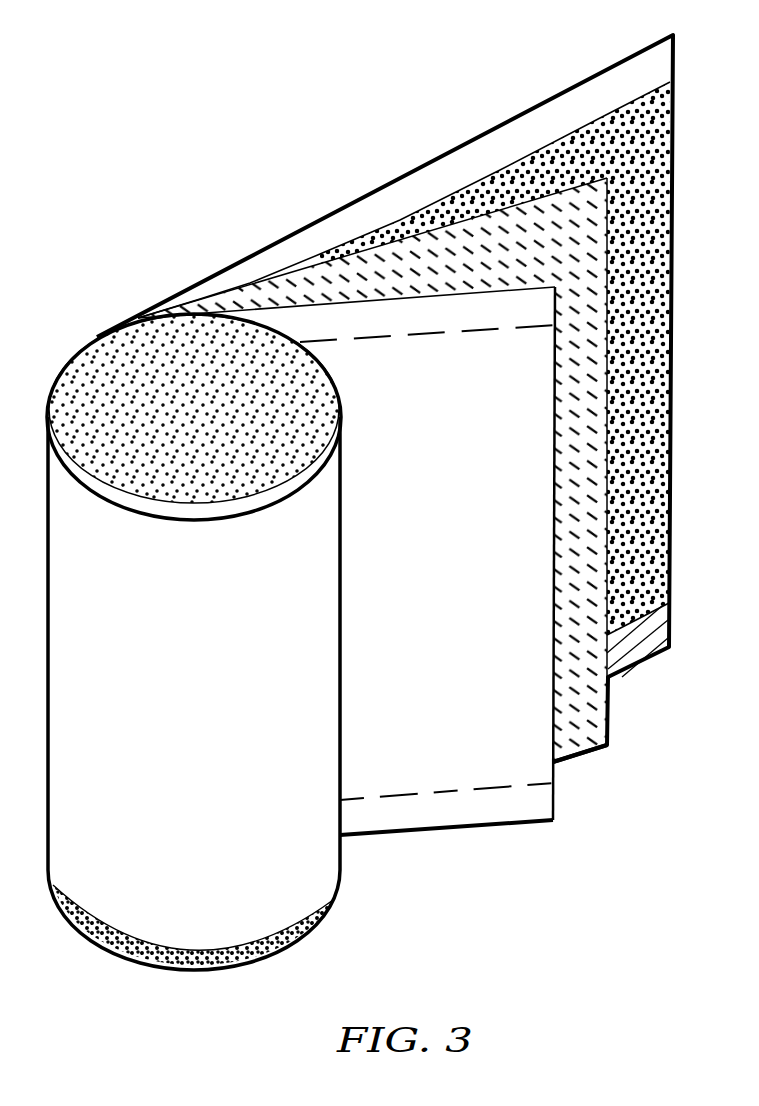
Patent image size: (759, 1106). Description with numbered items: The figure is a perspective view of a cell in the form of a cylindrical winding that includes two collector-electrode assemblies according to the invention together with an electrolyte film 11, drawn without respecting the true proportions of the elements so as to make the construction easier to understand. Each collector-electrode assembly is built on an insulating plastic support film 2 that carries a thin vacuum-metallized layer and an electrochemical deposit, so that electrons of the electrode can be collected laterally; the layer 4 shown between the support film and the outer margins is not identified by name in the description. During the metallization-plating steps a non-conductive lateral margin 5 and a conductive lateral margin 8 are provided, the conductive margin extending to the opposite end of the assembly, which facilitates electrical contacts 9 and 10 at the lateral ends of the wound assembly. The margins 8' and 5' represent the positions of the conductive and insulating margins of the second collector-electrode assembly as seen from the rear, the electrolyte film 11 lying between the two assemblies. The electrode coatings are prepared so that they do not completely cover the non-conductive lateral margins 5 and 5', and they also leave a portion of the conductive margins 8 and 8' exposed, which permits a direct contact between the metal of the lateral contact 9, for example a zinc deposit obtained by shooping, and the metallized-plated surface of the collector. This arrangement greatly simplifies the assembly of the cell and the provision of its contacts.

The insulating plastic support film 2 is at (378, 353).
The foamed plastic layer 4 is at (552, 153).
The non-conductive lateral margin 5 is at (385, 397).
The non-conductive lateral margin of the second collector-electrode assembly 5' is at (346, 582).
The conductive lateral margin 8 is at (657, 656).
The conductive lateral margin of the second collector-electrode assembly 8' is at (366, 241).
The electrical contact 9 is at (117, 349).
The electrical contact 10 is at (300, 937).
The electrolyte film 11 is at (490, 230).